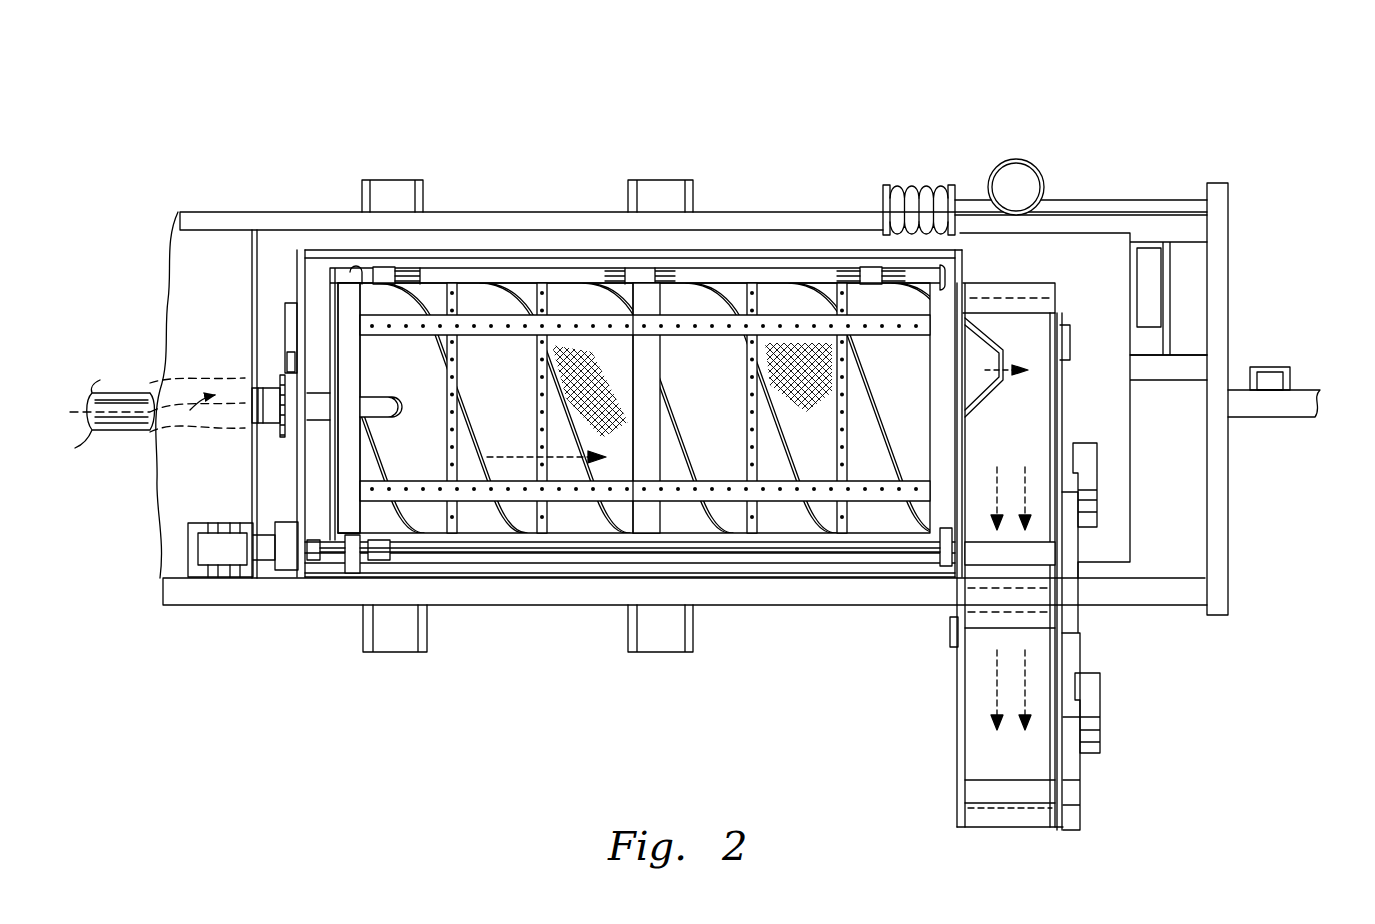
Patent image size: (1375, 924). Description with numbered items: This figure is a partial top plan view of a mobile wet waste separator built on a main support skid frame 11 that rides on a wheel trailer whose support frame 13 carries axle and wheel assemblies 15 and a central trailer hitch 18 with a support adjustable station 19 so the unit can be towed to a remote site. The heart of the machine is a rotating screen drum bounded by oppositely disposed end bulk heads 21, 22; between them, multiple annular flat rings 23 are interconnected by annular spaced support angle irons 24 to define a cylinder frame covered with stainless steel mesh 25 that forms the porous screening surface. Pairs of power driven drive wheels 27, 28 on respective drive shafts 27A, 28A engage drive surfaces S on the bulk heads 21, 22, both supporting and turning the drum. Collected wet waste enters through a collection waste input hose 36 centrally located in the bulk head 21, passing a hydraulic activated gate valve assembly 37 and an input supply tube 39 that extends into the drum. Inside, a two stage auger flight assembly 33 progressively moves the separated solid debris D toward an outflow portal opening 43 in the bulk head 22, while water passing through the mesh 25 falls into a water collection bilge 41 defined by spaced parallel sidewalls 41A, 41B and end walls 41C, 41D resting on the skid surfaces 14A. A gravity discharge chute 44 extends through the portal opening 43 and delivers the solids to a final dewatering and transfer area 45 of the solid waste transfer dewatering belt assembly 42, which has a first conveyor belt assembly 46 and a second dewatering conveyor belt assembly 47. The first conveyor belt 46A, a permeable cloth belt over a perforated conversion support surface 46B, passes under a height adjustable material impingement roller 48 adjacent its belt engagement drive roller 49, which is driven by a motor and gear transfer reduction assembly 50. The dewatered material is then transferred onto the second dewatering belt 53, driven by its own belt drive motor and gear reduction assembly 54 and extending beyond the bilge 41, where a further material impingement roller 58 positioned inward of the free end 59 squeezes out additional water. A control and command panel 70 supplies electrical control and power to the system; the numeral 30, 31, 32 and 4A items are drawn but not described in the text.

The top plate of housing 4A is at (585, 232).
The main support skid frame 11 is at (1195, 297).
The support frame 13 is at (1222, 585).
The skid surfaces 14A is at (1185, 540).
The axle and wheel assemblies 15 is at (512, 165).
The central trailer hitch 18 is at (1272, 417).
The support adjustable station 19 is at (1290, 378).
The end bulk head 21 is at (268, 528).
The end bulk head 22 is at (860, 490).
The annular flat rings 23 is at (746, 432).
The support angle irons 24 is at (658, 399).
The stainless steel mesh 25 is at (805, 432).
The drive wheel 27 is at (318, 555).
The drive shaft 27A is at (348, 555).
The drive wheel 28 is at (347, 343).
The drive shaft 28A is at (385, 268).
The base plate 30 is at (185, 580).
The motor 31 is at (222, 545).
The motor mount 32 is at (290, 562).
The two stage auger flight assembly 33 is at (725, 300).
The collection waste input hose 36 is at (268, 457).
The hydraulic activated gate valve assembly 37 is at (283, 362).
The input supply tube 39 is at (133, 396).
The water collection bilge 41 is at (797, 242).
The sidewall 41A is at (815, 262).
The sidewall 41B is at (750, 578).
The end wall 41C is at (290, 330).
The end wall 41D is at (1180, 355).
The solid waste transfer dewatering belt assembly 42 is at (1077, 272).
The outflow portal opening 43 is at (966, 380).
The gravity discharge chute 44 is at (1003, 405).
The final dewatering and transfer area 45 is at (983, 657).
The first conveyor belt assembly 46 is at (1183, 590).
The first conveyor belt 46A is at (1047, 458).
The perforated conversion support surface 46B is at (1063, 447).
The second dewatering conveyor belt assembly 47 is at (1066, 592).
The material impingement roller 48 is at (985, 560).
The belt engagement drive roller 49 is at (1030, 612).
The motor and gear transfer reduction assembly 50 is at (1103, 503).
The second dewatering belt 53 is at (985, 745).
The belt drive motor and gear reduction assembly 54 is at (1105, 735).
The material impingement roller 58 is at (985, 792).
The free end 59 is at (1010, 828).
The control and command panel 70 is at (1150, 268).
The solid debris D is at (512, 455).
The drive surfaces S is at (278, 378).